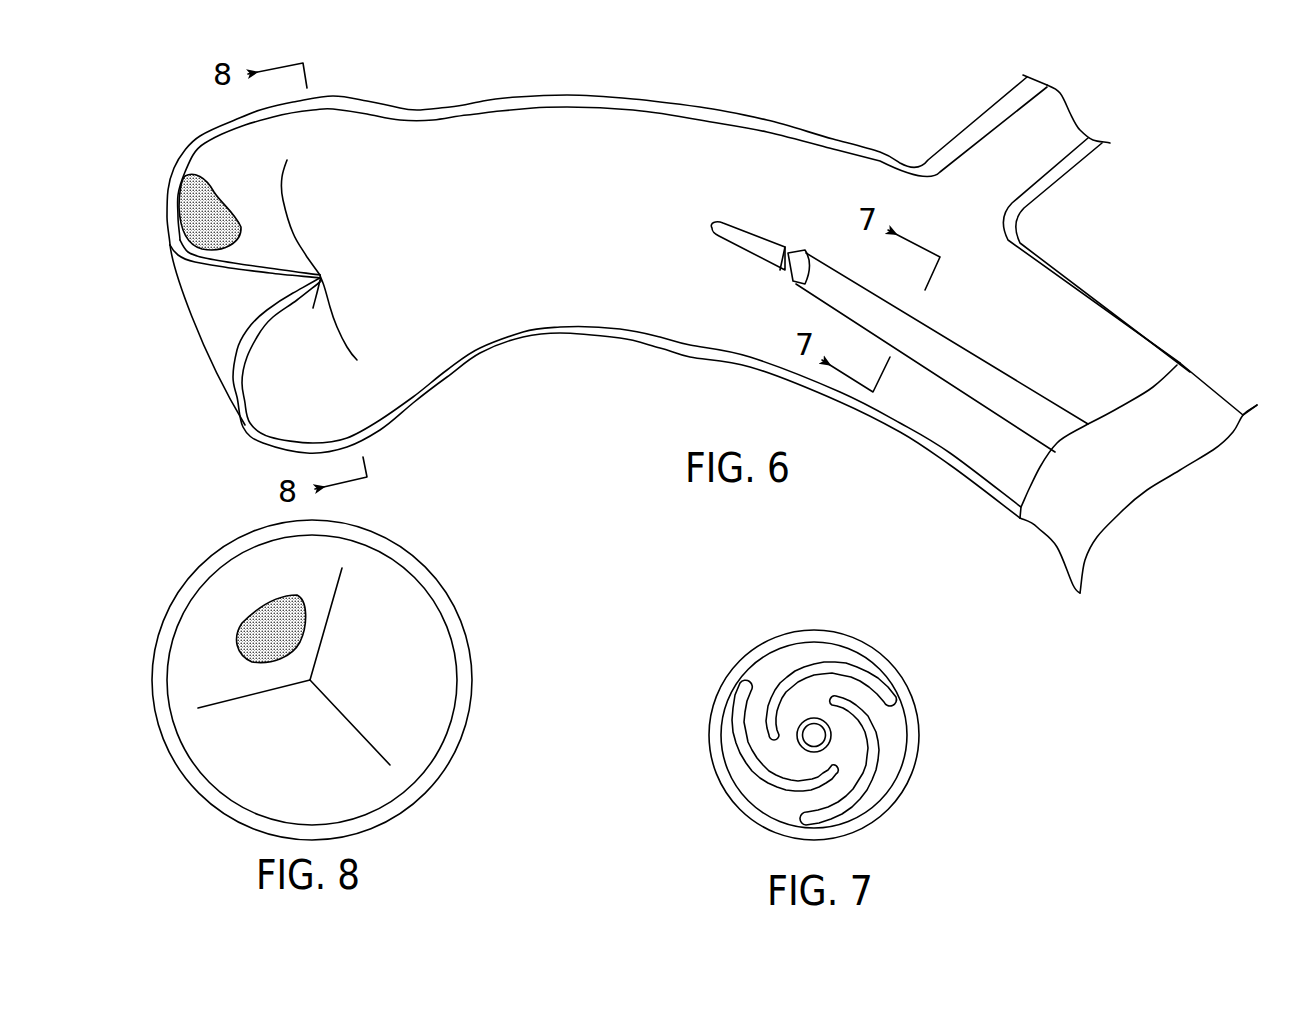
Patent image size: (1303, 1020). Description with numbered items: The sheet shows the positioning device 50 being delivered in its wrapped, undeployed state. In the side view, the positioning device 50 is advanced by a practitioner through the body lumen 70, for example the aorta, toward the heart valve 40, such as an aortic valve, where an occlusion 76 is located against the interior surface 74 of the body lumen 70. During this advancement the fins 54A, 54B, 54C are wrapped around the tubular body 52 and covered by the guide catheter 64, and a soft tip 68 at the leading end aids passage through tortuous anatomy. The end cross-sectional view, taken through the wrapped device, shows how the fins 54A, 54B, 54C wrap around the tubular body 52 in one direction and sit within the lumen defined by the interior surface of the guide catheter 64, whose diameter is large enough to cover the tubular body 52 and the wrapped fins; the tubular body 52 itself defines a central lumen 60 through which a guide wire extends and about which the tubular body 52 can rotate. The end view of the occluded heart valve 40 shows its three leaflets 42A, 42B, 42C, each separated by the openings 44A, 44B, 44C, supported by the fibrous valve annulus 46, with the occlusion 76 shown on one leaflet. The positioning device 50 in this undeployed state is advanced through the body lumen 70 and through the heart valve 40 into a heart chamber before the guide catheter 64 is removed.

In FIG. 6, the heart valve 40 is at (230, 380).
In FIG. 8, the heart valve 40 is at (496, 585).
In FIG. 6, the leaflet 42A is at (198, 152).
In FIG. 8, the leaflet 42A is at (297, 577).
In FIG. 6, the leaflet 42B is at (232, 342).
In FIG. 8, the leaflet 42B is at (407, 671).
In FIG. 8, the leaflet 42C is at (294, 773).
In FIG. 8, the opening 44A is at (332, 627).
In FIG. 8, the opening 44B is at (367, 720).
In FIG. 8, the opening 44C is at (225, 698).
In FIG. 8, the valve annulus 46 is at (465, 663).
In FIG. 6, the positioning device 50 is at (743, 212).
In FIG. 7, the positioning device 50 is at (930, 676).
In FIG. 7, the tubular body 52 is at (858, 770).
In FIG. 7, the fin 54A is at (768, 673).
In FIG. 7, the fin 54B is at (763, 728).
In FIG. 7, the fin 54C is at (732, 750).
In FIG. 7, the lumen 60 is at (816, 730).
In FIG. 6, the guide catheter 64 is at (988, 357).
In FIG. 7, the guide catheter 64 is at (863, 642).
In FIG. 6, the tip 68 is at (730, 247).
In FIG. 6, the body lumen 70 is at (658, 99).
In FIG. 6, the interior surface 74 is at (545, 335).
In FIG. 6, the occlusion 76 is at (180, 214).
In FIG. 8, the occlusion 76 is at (242, 627).